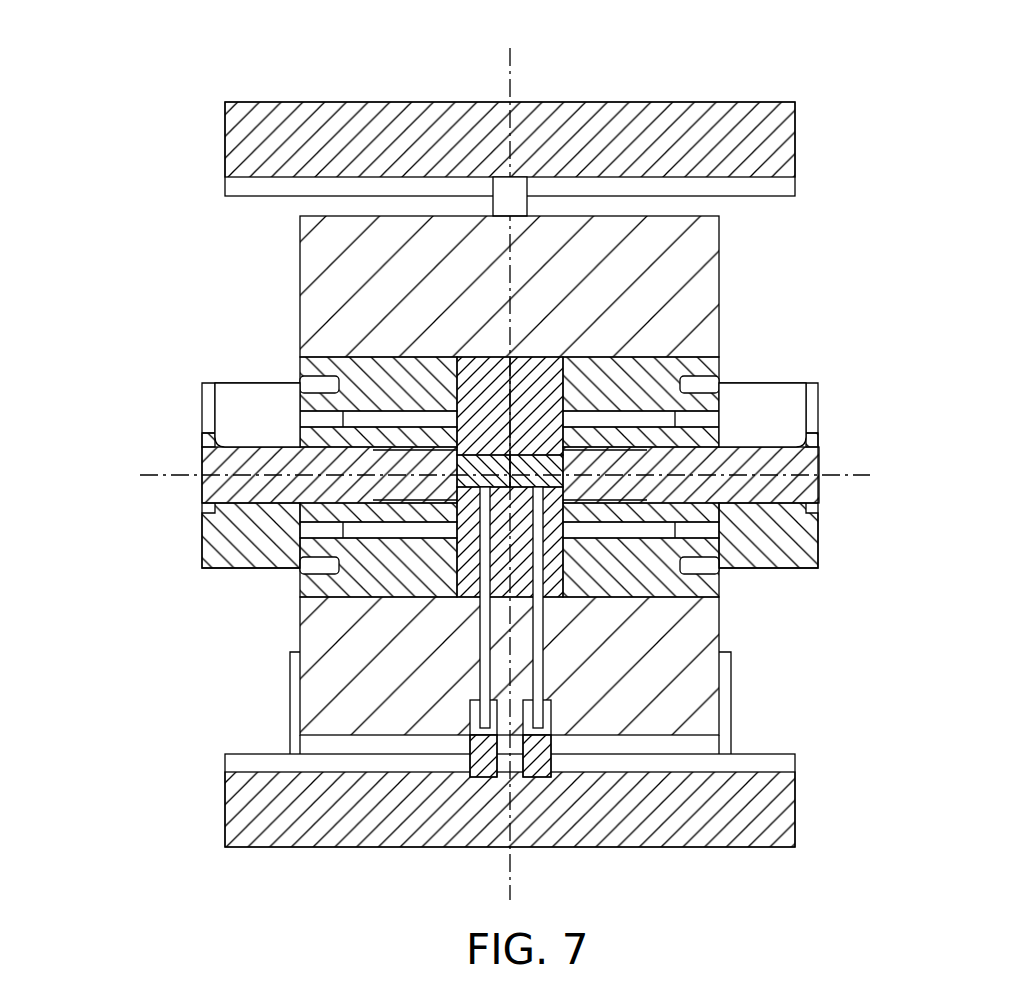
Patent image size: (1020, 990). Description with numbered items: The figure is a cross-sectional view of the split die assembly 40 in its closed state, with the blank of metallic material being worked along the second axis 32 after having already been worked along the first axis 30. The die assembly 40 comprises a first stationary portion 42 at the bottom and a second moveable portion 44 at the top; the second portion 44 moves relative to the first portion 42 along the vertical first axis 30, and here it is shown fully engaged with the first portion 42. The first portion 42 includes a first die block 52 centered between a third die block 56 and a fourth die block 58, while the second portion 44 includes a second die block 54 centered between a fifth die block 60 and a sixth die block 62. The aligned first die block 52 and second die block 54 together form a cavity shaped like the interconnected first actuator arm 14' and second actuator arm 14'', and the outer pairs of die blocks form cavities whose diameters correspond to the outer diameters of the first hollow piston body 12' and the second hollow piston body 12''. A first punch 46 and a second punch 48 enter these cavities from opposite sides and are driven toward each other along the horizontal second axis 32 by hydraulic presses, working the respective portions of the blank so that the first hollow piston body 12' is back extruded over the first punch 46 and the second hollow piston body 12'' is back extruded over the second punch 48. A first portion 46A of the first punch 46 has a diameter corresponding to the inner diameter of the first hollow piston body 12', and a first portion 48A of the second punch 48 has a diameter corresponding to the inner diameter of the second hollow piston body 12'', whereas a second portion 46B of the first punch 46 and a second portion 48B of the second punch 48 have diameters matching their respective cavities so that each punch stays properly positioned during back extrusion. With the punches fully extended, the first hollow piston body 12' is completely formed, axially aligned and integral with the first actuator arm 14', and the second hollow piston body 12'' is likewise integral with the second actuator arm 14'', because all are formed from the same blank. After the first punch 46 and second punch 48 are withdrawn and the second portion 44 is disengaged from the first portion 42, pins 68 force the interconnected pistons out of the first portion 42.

The first axis 30 is at (512, 60).
The second axis 32 is at (856, 475).
The split die assembly 40 is at (175, 228).
The first stationary portion 42 is at (736, 630).
The second moveable portion 44 is at (762, 281).
The first punch 46 is at (202, 546).
The first portion of the first punch 46A is at (412, 488).
The second portion of the first punch 46B is at (266, 451).
The second punch 48 is at (810, 544).
The first portion of the second punch 48A is at (613, 488).
The second portion of the second punch 48B is at (764, 451).
The first die block 52 is at (560, 598).
The second die block 54 is at (546, 356).
The third die block 56 is at (305, 589).
The fourth die block 58 is at (716, 590).
The fifth die block 60 is at (306, 364).
The sixth die block 62 is at (714, 366).
The pins 68 is at (471, 727).
The first hollow piston body 12' is at (378, 377).
The second hollow piston body 12'' is at (641, 377).
The first actuator arm 14' is at (483, 440).
The second actuator arm 14'' is at (538, 440).